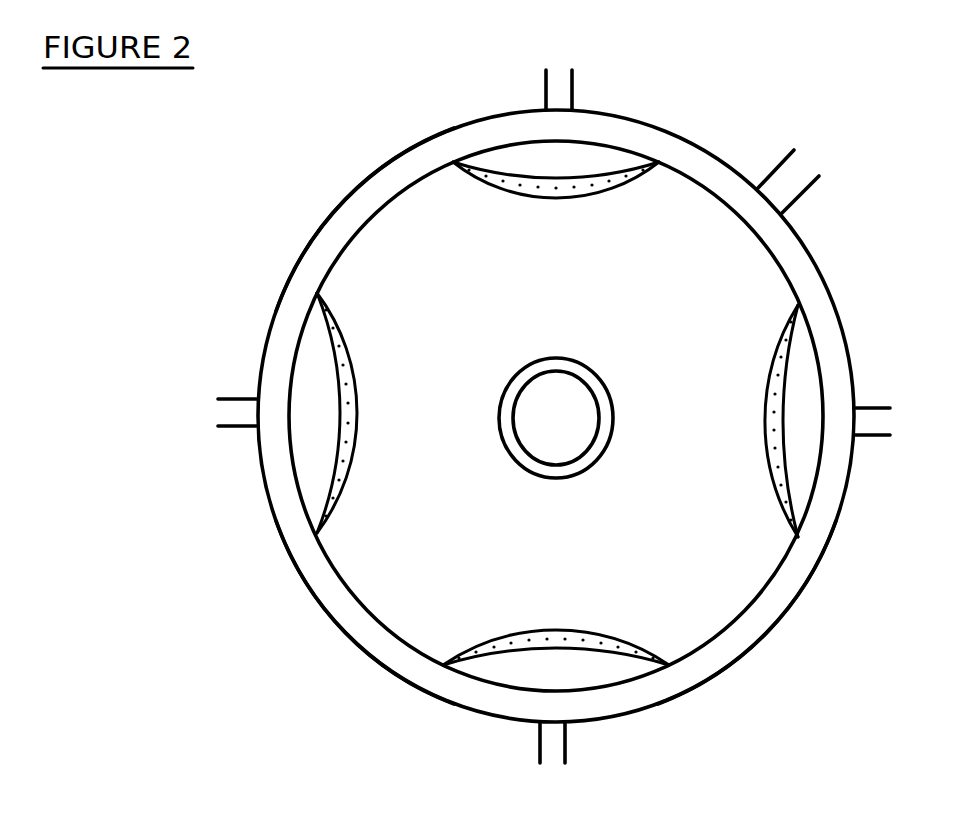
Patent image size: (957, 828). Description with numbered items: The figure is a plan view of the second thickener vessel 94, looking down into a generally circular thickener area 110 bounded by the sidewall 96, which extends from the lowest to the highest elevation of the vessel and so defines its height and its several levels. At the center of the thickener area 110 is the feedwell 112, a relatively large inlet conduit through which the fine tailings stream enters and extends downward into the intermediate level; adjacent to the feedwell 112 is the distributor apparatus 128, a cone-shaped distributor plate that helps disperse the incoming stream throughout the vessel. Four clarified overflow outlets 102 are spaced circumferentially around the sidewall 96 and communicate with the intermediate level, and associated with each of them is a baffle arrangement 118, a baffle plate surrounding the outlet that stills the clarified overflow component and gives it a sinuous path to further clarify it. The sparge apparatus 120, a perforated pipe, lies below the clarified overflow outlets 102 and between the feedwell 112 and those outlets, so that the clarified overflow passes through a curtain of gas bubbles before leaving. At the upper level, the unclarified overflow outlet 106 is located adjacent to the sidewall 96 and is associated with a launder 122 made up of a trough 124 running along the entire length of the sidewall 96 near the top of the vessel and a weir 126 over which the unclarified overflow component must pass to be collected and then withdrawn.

The second thickener vessel 94 is at (509, 400).
The sidewall 96 is at (307, 237).
The clarified overflow outlets 102 is at (578, 83).
The unclarified overflow outlet 106 is at (812, 198).
The thickener area 110 is at (668, 528).
The feedwell 112 is at (593, 368).
The baffle arrangement 118 is at (500, 175).
The sparge apparatus 120 is at (537, 192).
The launder 122 is at (355, 622).
The trough 124 is at (410, 160).
The weir 126 is at (730, 628).
The distributor apparatus 128 is at (530, 428).